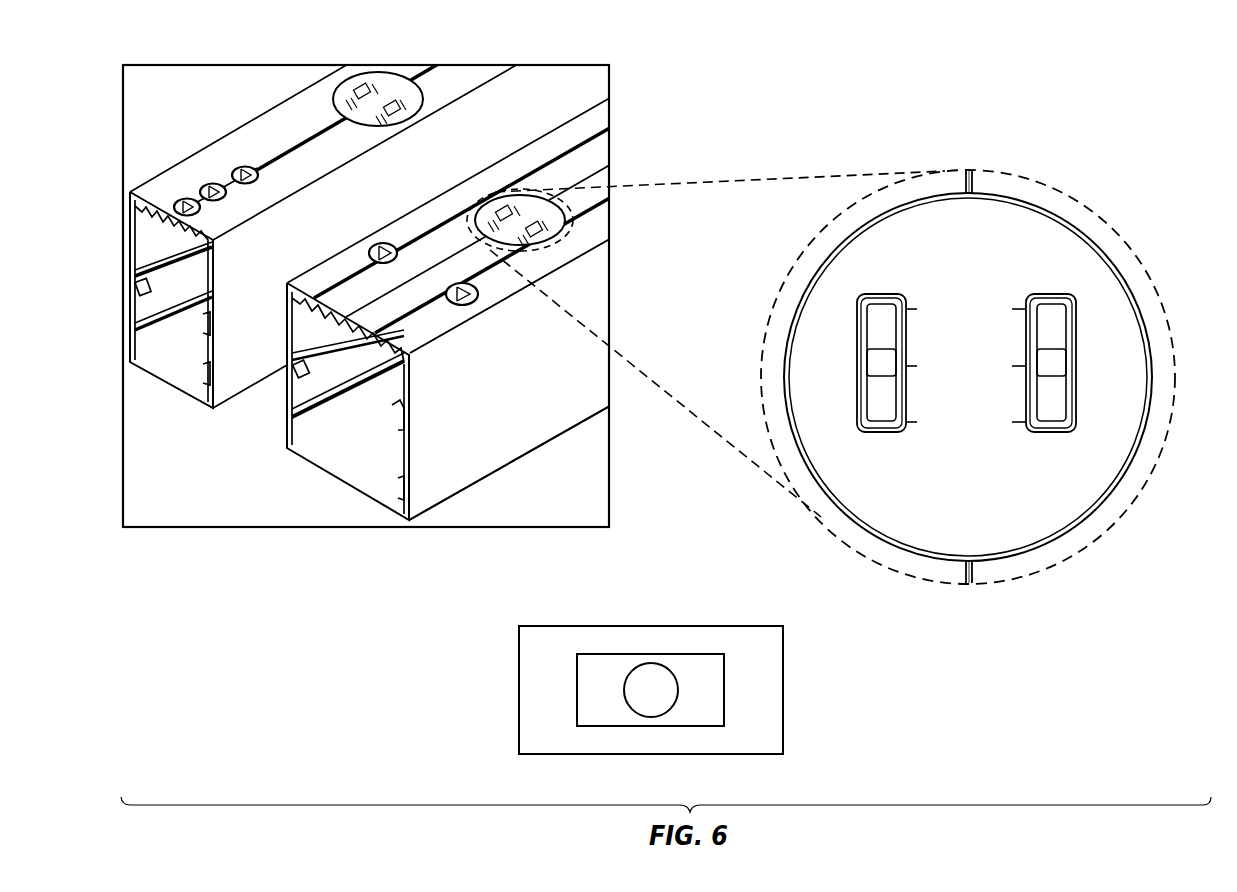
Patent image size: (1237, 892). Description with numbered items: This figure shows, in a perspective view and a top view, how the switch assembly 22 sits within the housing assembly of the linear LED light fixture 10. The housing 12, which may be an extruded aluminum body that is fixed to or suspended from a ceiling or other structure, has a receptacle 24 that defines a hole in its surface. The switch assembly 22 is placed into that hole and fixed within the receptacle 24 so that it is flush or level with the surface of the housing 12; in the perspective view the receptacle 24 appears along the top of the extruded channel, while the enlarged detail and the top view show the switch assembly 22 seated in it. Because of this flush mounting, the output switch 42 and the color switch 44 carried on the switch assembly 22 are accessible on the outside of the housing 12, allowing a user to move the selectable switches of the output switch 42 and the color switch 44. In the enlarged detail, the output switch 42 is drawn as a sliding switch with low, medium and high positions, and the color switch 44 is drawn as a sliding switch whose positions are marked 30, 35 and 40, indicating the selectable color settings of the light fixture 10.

The linear LED light fixture 10 is at (650, 626).
The housing 12 is at (520, 458).
The switch assembly 22 is at (350, 84).
The receptacle 24 is at (424, 101).
The first color setting 30 is at (1007, 309).
The second color setting 35 is at (1007, 366).
The third color setting 40 is at (1007, 422).
The output switch 42 is at (878, 289).
The color switch 44 is at (1048, 289).